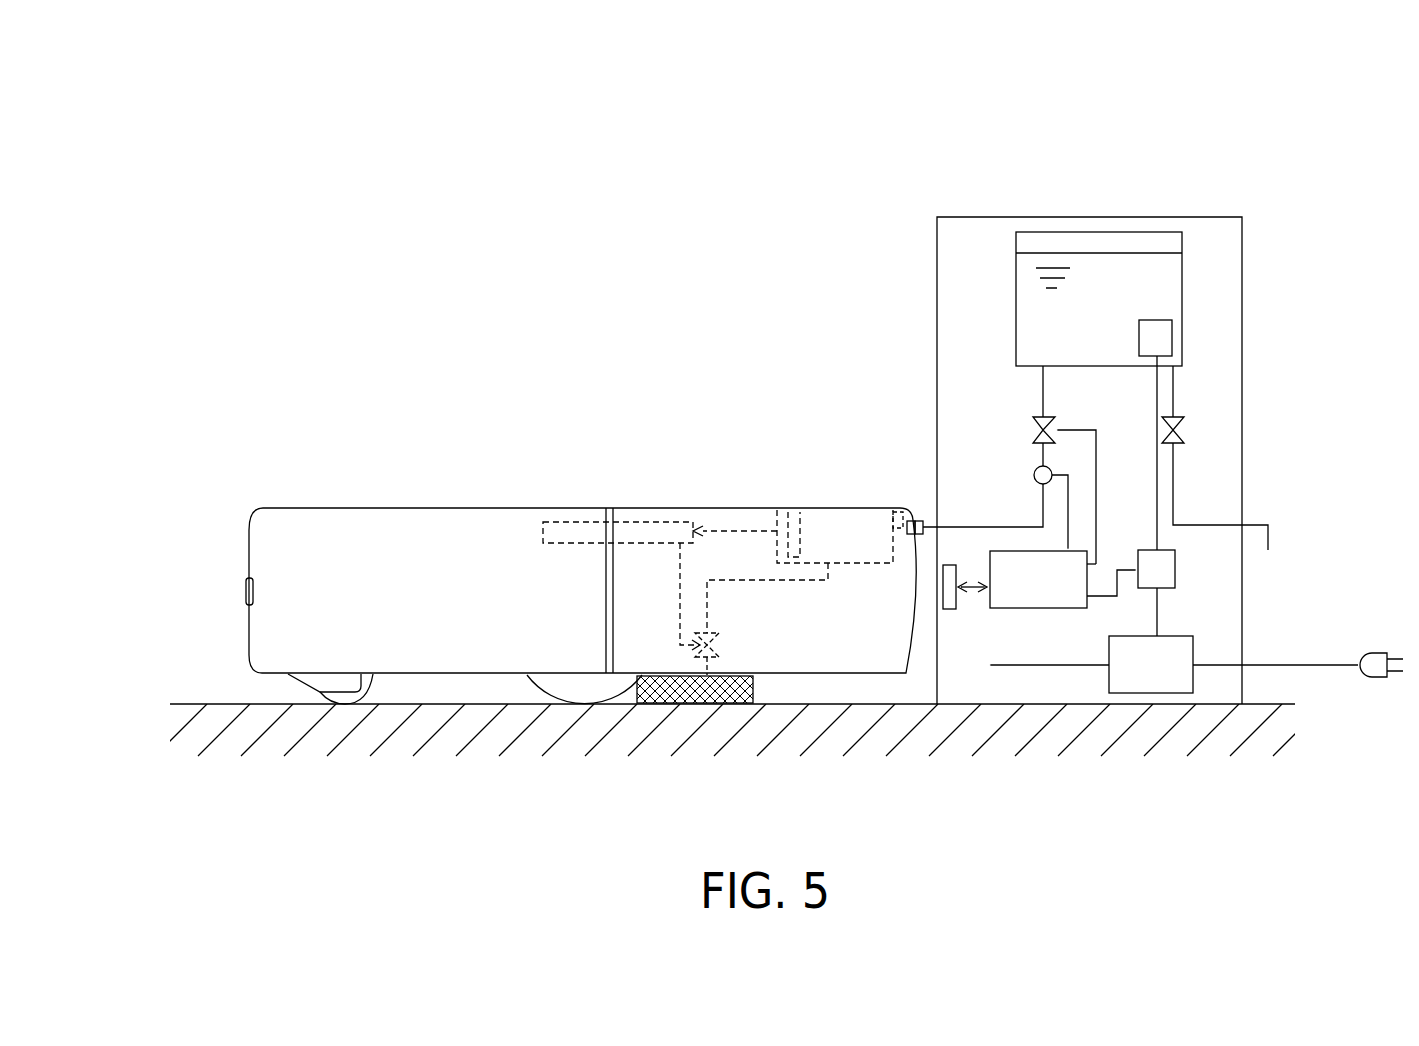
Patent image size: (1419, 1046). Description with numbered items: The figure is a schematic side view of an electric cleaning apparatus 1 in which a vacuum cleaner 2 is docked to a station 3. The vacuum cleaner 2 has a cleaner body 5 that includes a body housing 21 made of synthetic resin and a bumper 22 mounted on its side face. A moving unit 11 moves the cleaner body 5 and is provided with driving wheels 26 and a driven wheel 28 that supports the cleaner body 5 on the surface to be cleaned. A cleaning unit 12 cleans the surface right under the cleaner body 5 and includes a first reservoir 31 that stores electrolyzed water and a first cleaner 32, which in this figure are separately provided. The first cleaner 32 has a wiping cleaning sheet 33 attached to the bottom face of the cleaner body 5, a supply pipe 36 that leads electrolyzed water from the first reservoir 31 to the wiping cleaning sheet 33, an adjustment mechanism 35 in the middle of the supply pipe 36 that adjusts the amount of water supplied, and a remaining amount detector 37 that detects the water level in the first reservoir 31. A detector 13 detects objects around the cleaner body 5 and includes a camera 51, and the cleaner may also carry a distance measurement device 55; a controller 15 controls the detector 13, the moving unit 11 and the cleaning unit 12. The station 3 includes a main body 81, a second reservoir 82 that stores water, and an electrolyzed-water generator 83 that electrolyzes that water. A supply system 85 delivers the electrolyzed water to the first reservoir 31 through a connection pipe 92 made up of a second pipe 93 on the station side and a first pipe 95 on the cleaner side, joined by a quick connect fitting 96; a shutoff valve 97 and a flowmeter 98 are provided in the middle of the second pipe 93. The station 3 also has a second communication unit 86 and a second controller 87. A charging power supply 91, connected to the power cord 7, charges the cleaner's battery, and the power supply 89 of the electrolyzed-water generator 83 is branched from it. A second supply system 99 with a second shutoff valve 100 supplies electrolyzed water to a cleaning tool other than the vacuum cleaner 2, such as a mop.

The electric cleaning apparatus 1 is at (897, 156).
The vacuum cleaner 2 is at (508, 618).
The station 3 is at (1140, 476).
The cleaner body 5 is at (771, 504).
The power cord 7 is at (1330, 667).
The moving unit 11 is at (540, 696).
The cleaning unit 12 is at (700, 747).
The detector 13 is at (176, 578).
The controller 15 is at (662, 520).
The body housing 21 is at (739, 520).
The bumper 22 is at (465, 535).
The driving wheel 26 is at (575, 748).
The driven wheel 28 is at (345, 705).
The first reservoir 31 is at (858, 563).
The first cleaner 32 is at (700, 747).
The wiping cleaning sheet 33 is at (655, 676).
The adjustment mechanism 35 is at (712, 657).
The supply pipe 36 is at (793, 580).
The remaining amount detector 37 is at (800, 512).
The camera 51 is at (176, 578).
The distance measurement device 55 is at (248, 592).
The main body 81 is at (1242, 380).
The second reservoir 82 is at (1182, 298).
The electrolyzed-water generator 83 is at (1172, 340).
The supply system 85 is at (1040, 391).
The second communication unit 86 is at (950, 610).
The second controller 87 is at (1060, 608).
The power supply 89 is at (1175, 568).
The charging power supply 91 is at (1157, 693).
The connection pipe 92 is at (912, 471).
The second pipe 93 is at (947, 522).
The first pipe 95 is at (898, 512).
The quick connect fitting 96 is at (913, 537).
The shutoff valve 97 is at (1033, 428).
The flowmeter 98 is at (1034, 478).
The second supply system 99 is at (1181, 478).
The second shutoff valve 100 is at (1185, 425).